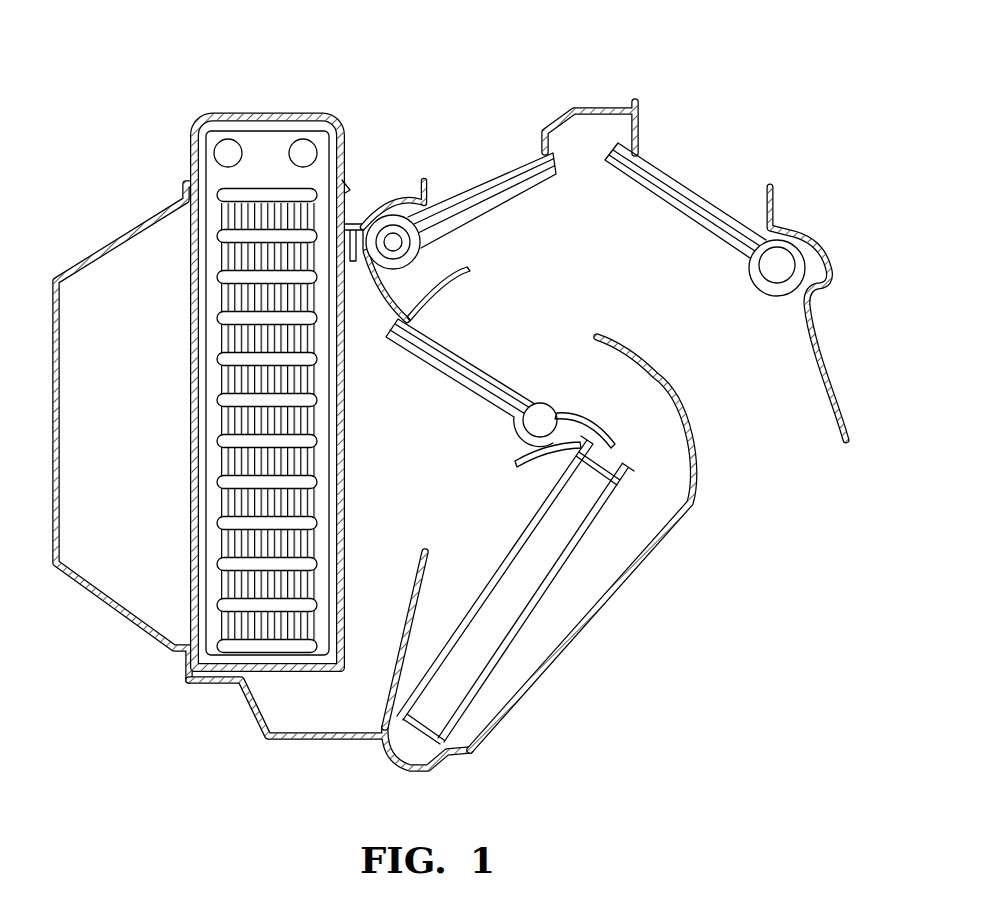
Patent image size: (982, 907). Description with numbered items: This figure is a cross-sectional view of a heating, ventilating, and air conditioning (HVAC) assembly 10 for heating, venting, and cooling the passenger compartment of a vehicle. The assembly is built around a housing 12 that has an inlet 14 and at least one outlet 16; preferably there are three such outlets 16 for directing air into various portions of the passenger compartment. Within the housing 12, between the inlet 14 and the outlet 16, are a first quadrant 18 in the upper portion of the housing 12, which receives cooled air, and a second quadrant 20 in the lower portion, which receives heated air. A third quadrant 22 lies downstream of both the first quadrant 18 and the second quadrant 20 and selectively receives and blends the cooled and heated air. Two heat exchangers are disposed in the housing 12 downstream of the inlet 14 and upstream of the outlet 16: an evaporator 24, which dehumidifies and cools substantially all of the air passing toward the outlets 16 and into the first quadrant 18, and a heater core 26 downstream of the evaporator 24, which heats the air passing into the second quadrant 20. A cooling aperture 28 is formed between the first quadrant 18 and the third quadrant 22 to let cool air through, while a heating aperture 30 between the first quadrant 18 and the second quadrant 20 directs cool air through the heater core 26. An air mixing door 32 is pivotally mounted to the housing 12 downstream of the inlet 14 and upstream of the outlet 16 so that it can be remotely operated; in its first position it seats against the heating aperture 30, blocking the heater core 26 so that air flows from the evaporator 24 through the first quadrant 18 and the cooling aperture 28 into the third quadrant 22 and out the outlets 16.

The heating, ventilating, and air conditioning (HVAC) assembly 10 is at (377, 63).
The housing 12 is at (290, 738).
The inlet 14 is at (143, 257).
The outlet 16 is at (545, 143).
The first quadrant 18 is at (415, 447).
The second quadrant 20 is at (637, 543).
The third quadrant 22 is at (555, 328).
The evaporator 24 is at (212, 601).
The heater core 26 is at (510, 618).
The cooling aperture 28 is at (440, 311).
The heating aperture 30 is at (427, 560).
The air mixing door 32 is at (527, 375).